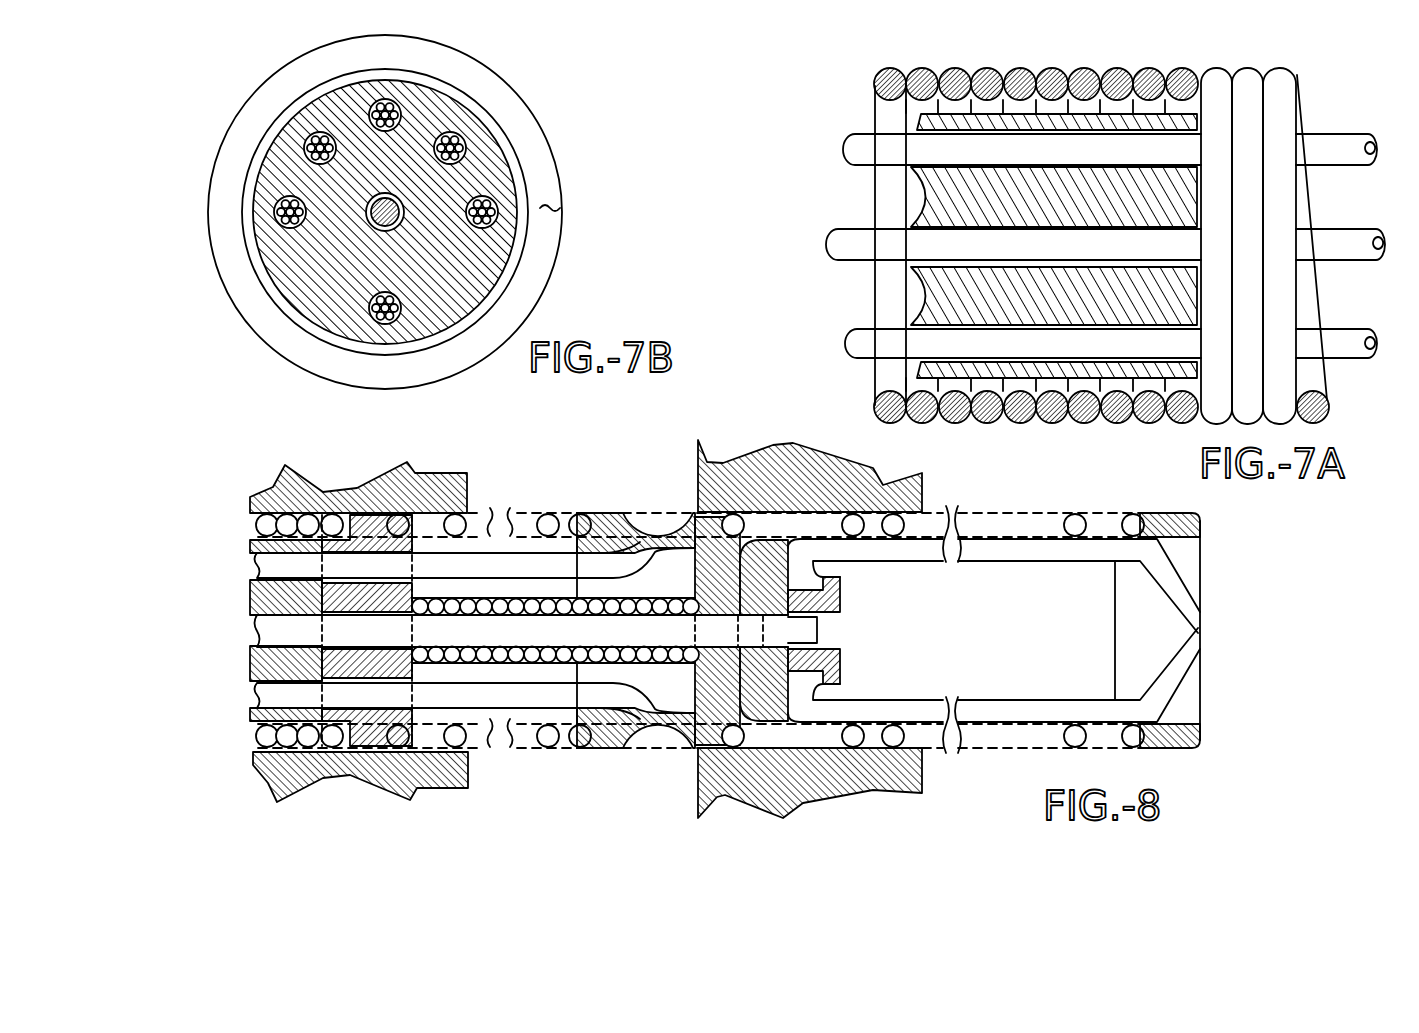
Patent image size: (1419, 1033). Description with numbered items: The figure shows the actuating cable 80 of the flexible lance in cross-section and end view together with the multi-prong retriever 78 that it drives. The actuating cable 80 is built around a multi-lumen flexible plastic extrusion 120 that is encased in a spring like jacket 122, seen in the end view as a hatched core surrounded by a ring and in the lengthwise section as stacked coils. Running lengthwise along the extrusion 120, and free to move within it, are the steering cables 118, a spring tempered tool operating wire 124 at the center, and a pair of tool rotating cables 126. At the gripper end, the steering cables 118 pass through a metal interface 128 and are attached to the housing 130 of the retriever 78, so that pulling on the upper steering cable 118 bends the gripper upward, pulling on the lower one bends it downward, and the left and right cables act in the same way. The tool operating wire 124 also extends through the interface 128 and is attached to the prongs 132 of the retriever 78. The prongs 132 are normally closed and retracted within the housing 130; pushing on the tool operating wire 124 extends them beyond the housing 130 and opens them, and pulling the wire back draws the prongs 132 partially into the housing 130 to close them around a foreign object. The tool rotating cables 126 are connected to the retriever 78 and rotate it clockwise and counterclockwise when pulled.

In FIG. 8, the multi-prong retriever 78 is at (963, 499).
In FIG. 7B, the actuating cable 80 is at (521, 62).
In FIG. 7A, the actuating cable 80 is at (1114, 55).
In FIG. 7B, the steering cables 118 is at (386, 100).
In FIG. 7A, the steering cables 118 is at (868, 140).
In FIG. 8, the steering cables 118 is at (282, 567).
In FIG. 7B, the multi-lumen flexible plastic extrusion 120 is at (487, 250).
In FIG. 7B, the spring like jacket 122 is at (517, 118).
In FIG. 7A, the spring like jacket 122 is at (972, 34).
In FIG. 7B, the tool operating wire 124 is at (383, 216).
In FIG. 7A, the tool operating wire 124 is at (856, 237).
In FIG. 8, the tool operating wire 124 is at (287, 629).
In FIG. 7B, the tool rotating cables 126 is at (305, 146).
In FIG. 8, the metal interface 128 is at (367, 518).
In FIG. 8, the housing 130 is at (611, 512).
In FIG. 8, the prongs 132 is at (1070, 549).